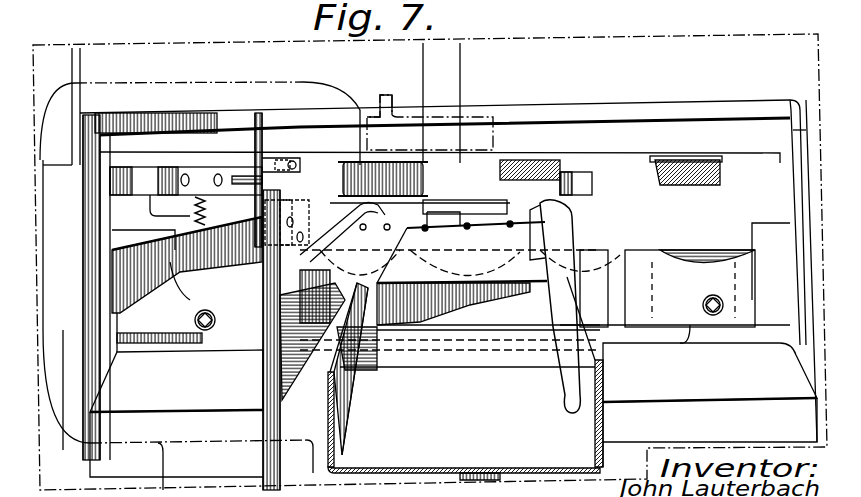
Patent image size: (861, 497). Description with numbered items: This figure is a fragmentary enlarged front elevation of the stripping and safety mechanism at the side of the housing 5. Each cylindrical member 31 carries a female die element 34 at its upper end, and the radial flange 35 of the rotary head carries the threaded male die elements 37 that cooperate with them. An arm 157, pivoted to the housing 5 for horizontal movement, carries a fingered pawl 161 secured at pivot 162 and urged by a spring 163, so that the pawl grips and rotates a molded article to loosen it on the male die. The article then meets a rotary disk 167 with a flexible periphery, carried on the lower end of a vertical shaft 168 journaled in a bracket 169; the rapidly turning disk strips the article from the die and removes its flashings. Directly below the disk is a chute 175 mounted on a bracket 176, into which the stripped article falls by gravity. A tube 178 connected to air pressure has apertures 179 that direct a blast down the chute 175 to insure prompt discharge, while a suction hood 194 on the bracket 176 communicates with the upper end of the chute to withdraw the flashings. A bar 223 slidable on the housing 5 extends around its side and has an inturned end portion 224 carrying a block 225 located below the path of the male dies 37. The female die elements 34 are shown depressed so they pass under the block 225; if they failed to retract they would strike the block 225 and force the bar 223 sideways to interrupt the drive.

The housing 5 is at (430, 262).
The cylindrical member 31 is at (137, 323).
The die element 34 is at (130, 238).
The radial flange 35 is at (690, 328).
The die element 37 is at (213, 170).
The arm 157 is at (62, 172).
The fingered pawl 161 is at (285, 158).
The pivot 162 is at (252, 165).
The spring 163 is at (155, 208).
The rotary disk 167 is at (590, 190).
The vertical shaft 168 is at (462, 74).
The bracket 169 is at (379, 95).
The chute 175 is at (460, 354).
The bracket 176 is at (287, 457).
The tube 178 is at (565, 372).
The apertures 179 is at (510, 226).
The suction hood 194 is at (180, 83).
The bar 223 is at (64, 390).
The inturned end portion 224 is at (237, 270).
The block 225 is at (291, 246).